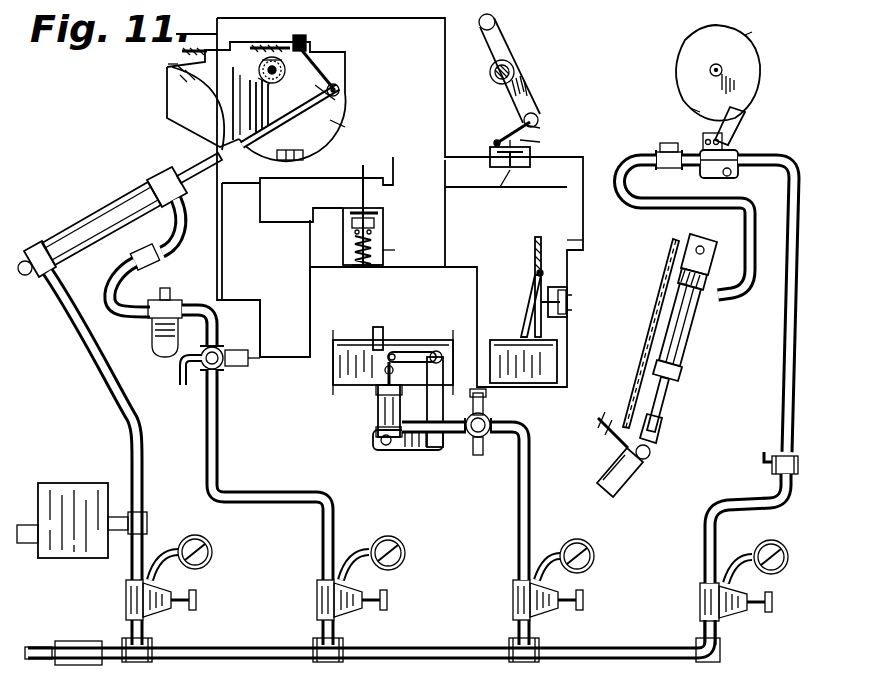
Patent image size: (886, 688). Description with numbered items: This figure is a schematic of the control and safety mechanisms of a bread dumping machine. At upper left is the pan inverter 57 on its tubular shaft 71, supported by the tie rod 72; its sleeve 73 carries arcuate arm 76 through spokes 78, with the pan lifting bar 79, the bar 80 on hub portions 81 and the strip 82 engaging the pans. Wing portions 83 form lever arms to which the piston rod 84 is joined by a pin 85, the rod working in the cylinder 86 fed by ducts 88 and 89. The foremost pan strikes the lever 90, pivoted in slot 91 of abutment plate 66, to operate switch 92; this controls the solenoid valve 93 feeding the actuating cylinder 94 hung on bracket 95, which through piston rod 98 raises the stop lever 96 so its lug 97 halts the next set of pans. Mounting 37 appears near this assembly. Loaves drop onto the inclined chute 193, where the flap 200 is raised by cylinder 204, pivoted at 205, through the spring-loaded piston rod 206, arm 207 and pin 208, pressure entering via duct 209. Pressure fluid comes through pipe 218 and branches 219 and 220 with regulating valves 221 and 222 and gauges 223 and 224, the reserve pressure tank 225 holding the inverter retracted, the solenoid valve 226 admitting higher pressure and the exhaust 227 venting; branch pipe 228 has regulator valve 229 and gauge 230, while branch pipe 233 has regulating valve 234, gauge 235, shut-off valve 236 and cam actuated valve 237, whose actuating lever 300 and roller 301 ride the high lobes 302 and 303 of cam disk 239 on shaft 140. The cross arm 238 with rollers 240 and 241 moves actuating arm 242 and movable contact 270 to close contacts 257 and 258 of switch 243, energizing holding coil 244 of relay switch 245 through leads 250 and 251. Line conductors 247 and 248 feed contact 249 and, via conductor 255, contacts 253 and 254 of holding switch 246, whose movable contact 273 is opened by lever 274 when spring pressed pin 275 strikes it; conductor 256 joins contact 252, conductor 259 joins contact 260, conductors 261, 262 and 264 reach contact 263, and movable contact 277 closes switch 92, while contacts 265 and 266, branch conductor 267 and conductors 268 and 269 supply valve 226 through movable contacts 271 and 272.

The bracket plate 37 is at (333, 362).
The pan inverter 57 is at (345, 105).
The abutment plate 66 is at (536, 252).
The tubular shaft 71 is at (262, 58).
The tie rod 72 is at (255, 100).
The sleeve 73 is at (312, 60).
The arcuate arm 76 is at (340, 80).
The spokes 78 is at (300, 100).
The pan lifting bar 79 is at (178, 53).
The bar 80 is at (290, 42).
The hub portions 81 is at (258, 71).
The strip 82 is at (308, 38).
The wing portions 83 is at (345, 130).
The piston rod 84 is at (190, 172).
The pin 85 is at (350, 90).
The cylinder 86 is at (108, 210).
The duct 88 is at (62, 298).
The duct 89 is at (182, 218).
The lever 90 is at (525, 305).
The slot 91 is at (533, 272).
The switch 92 is at (566, 312).
The solenoid valve 93 is at (490, 405).
The actuating cylinder 94 is at (378, 405).
The bracket 95 is at (425, 450).
The stop lever 96 is at (400, 347).
The lug 97 is at (375, 335).
The piston rod 98 is at (375, 370).
The shaft 140 is at (516, 65).
The inclined chute 193 is at (645, 330).
The flap 200 is at (612, 415).
The cylinder 204 is at (700, 335).
The pivotal support 205 is at (715, 235).
The piston rod 206 is at (672, 400).
The arm 207 is at (635, 470).
The pin 208 is at (665, 436).
The duct 209 is at (650, 212).
The pipe 218 is at (262, 660).
The branch 219 is at (130, 622).
The branch 220 is at (322, 622).
The pressure regulating valve 221 is at (125, 592).
The pressure regulating valve 222 is at (316, 592).
The pressure indicating gauge 223 is at (222, 548).
The pressure indicating gauge 224 is at (405, 549).
The reserve pressure tank 225 is at (92, 483).
The solenoid valve 226 is at (236, 372).
The exhaust 227 is at (188, 393).
The branch pipe 228 is at (515, 622).
The pressure regulator valve 229 is at (510, 592).
The pressure gauge 230 is at (595, 556).
The branch pipe 233 is at (705, 625).
The pressure regulating valve 234 is at (702, 600).
The pressure gauge 235 is at (786, 545).
The shut-off valve 236 is at (772, 468).
The cam actuated valve 237 is at (740, 156).
The cross arm 238 is at (536, 103).
The cam disk 239 is at (680, 68).
The roller 240 is at (535, 130).
The roller 241 is at (497, 22).
The actuating arm 242 is at (540, 143).
The switch 243 is at (497, 150).
The holding coil 244 is at (355, 265).
The relay switch 245 is at (375, 265).
The holding switch 246 is at (180, 72).
The line conductor 247 is at (178, 34).
The line conductor 248 is at (400, 202).
The contact 249 is at (262, 82).
The lead 250 is at (465, 277).
The lead 251 is at (383, 238).
The contact 252 is at (390, 222).
The contact 253 is at (355, 222).
The contact 254 is at (185, 78).
The conductor 255 is at (200, 115).
The conductor 256 is at (420, 160).
The contact 257 is at (495, 168).
The contact 258 is at (520, 166).
The conductor 259 is at (580, 246).
The contact 260 is at (580, 305).
The conductor 261 is at (590, 360).
The conductor 262 is at (472, 300).
The contact 263 is at (572, 290).
The conductor 264 is at (560, 220).
The contact 265 is at (350, 210).
The contact 266 is at (375, 210).
The branch conductor 267 is at (383, 252).
The conductor 268 is at (310, 285).
The conductor 269 is at (225, 265).
The movable contact 270 is at (517, 187).
The movable contact 271 is at (362, 200).
The movable contact 272 is at (355, 228).
The movable contact 273 is at (170, 66).
The lever 274 is at (188, 80).
The spring pressed pin 275 is at (290, 162).
The movable contact 277 is at (575, 300).
The actuating lever 300 is at (740, 140).
The roller 301 is at (755, 112).
The high lobe 302 is at (750, 36).
The high lobe 303 is at (680, 112).